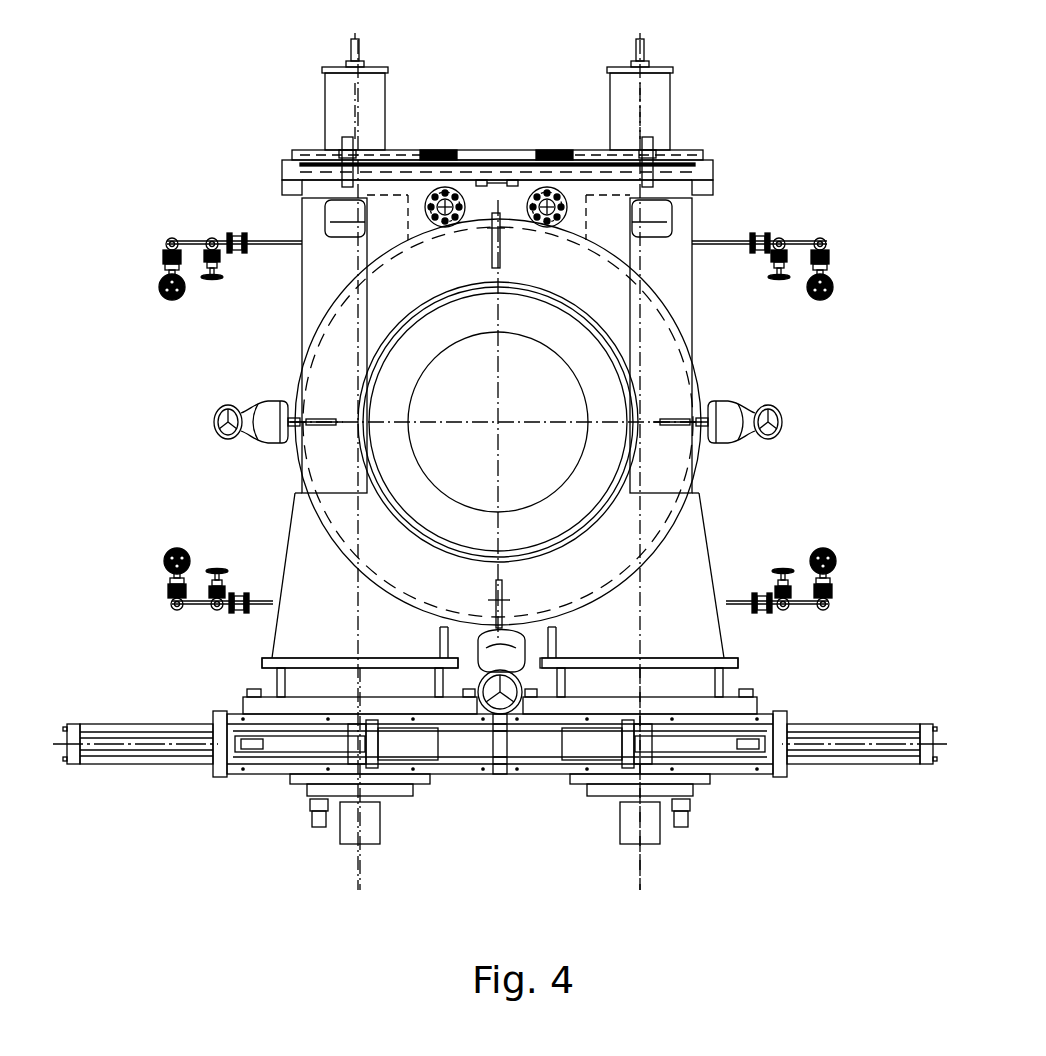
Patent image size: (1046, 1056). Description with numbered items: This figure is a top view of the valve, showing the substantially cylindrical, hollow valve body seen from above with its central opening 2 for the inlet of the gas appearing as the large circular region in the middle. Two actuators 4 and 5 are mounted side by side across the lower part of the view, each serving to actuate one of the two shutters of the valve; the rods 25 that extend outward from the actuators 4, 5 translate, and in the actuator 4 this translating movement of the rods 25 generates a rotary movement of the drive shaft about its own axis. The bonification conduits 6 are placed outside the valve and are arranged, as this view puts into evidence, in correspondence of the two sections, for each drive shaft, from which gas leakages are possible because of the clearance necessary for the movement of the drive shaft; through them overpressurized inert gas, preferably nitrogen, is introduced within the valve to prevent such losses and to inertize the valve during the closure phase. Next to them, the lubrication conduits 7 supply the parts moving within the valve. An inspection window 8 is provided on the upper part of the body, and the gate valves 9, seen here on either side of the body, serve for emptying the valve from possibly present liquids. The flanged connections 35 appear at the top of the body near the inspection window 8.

The opening 2 is at (397, 397).
The actuator 4 is at (738, 768).
The actuator 5 is at (270, 771).
The bonification conduits 6 is at (212, 241).
The lubrication conduits 7 is at (172, 241).
The inspection window 8 is at (520, 151).
The gate valves 9 is at (253, 418).
The rods 25 is at (110, 762).
The connection flange 35 is at (546, 188).